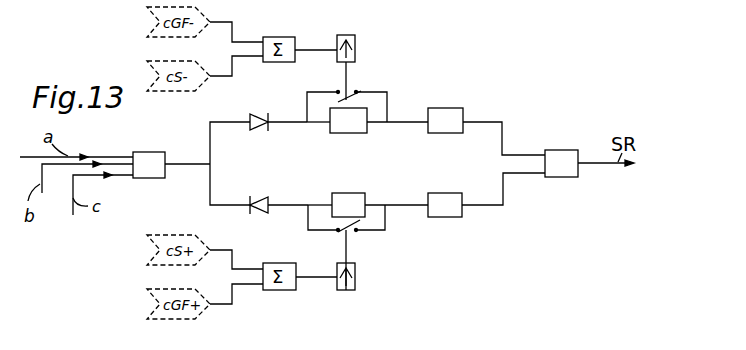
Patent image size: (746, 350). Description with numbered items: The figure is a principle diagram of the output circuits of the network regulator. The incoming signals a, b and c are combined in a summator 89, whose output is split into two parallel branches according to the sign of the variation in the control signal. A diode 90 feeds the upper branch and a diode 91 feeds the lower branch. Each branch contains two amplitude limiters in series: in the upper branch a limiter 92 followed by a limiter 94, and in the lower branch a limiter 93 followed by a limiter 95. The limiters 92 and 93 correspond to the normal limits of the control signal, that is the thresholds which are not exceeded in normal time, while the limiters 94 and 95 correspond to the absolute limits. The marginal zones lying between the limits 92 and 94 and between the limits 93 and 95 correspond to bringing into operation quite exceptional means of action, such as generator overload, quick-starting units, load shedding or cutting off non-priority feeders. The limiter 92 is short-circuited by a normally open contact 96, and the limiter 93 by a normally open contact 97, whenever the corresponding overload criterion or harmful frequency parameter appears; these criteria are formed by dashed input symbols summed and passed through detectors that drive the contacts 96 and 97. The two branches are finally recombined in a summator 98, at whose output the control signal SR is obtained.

The summator 89 is at (144, 152).
The diode 90 is at (260, 130).
The diode 91 is at (260, 197).
The amplitude limiter 92 is at (344, 133).
The amplitude limiter 93 is at (344, 193).
The amplitude limiter 94 is at (440, 133).
The amplitude limiter 95 is at (442, 193).
The normally open contact 96 is at (349, 77).
The normally open contact 97 is at (350, 252).
The summator 98 is at (548, 150).